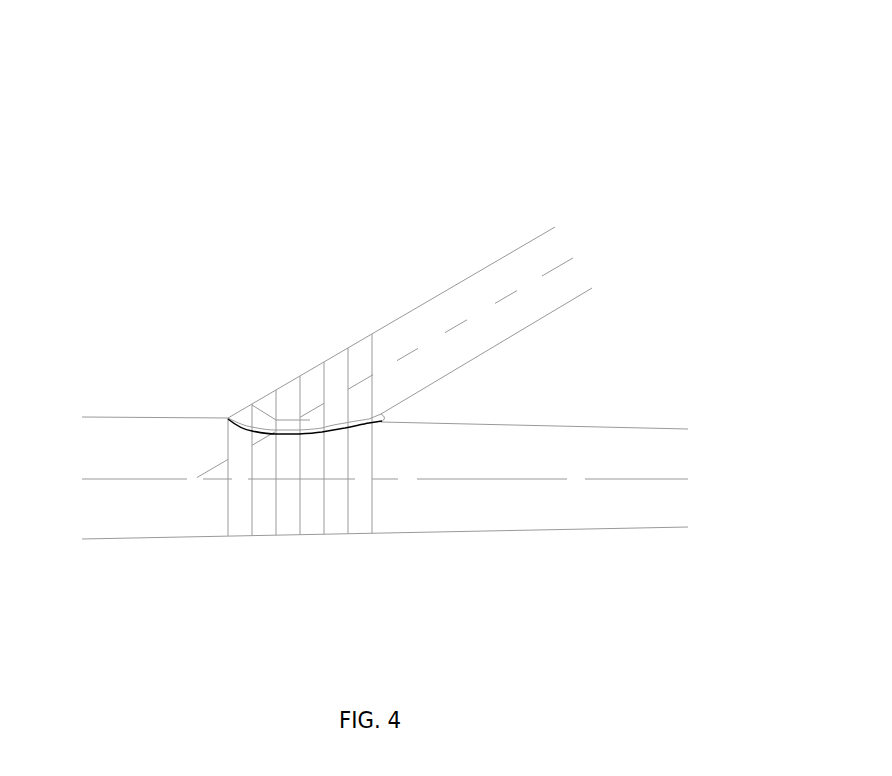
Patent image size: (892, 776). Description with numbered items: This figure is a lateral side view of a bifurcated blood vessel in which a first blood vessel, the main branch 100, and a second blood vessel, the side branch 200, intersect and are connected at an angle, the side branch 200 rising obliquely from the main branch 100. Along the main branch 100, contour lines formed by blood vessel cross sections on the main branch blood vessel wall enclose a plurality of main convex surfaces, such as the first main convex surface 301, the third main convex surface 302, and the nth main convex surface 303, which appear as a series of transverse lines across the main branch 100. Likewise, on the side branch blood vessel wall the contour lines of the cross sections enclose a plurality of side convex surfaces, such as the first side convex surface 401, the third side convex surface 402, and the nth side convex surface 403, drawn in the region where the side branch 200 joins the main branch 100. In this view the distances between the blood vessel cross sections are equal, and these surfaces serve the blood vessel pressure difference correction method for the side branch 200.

The main branch 100 is at (482, 553).
The side branch 200 is at (445, 253).
The first main convex surface 301 is at (380, 528).
The third main convex surface 302 is at (328, 532).
The nth main convex surface 303 is at (227, 532).
The first side convex surface 401 is at (372, 350).
The third side convex surface 402 is at (318, 366).
The nth side convex surface 403 is at (227, 418).